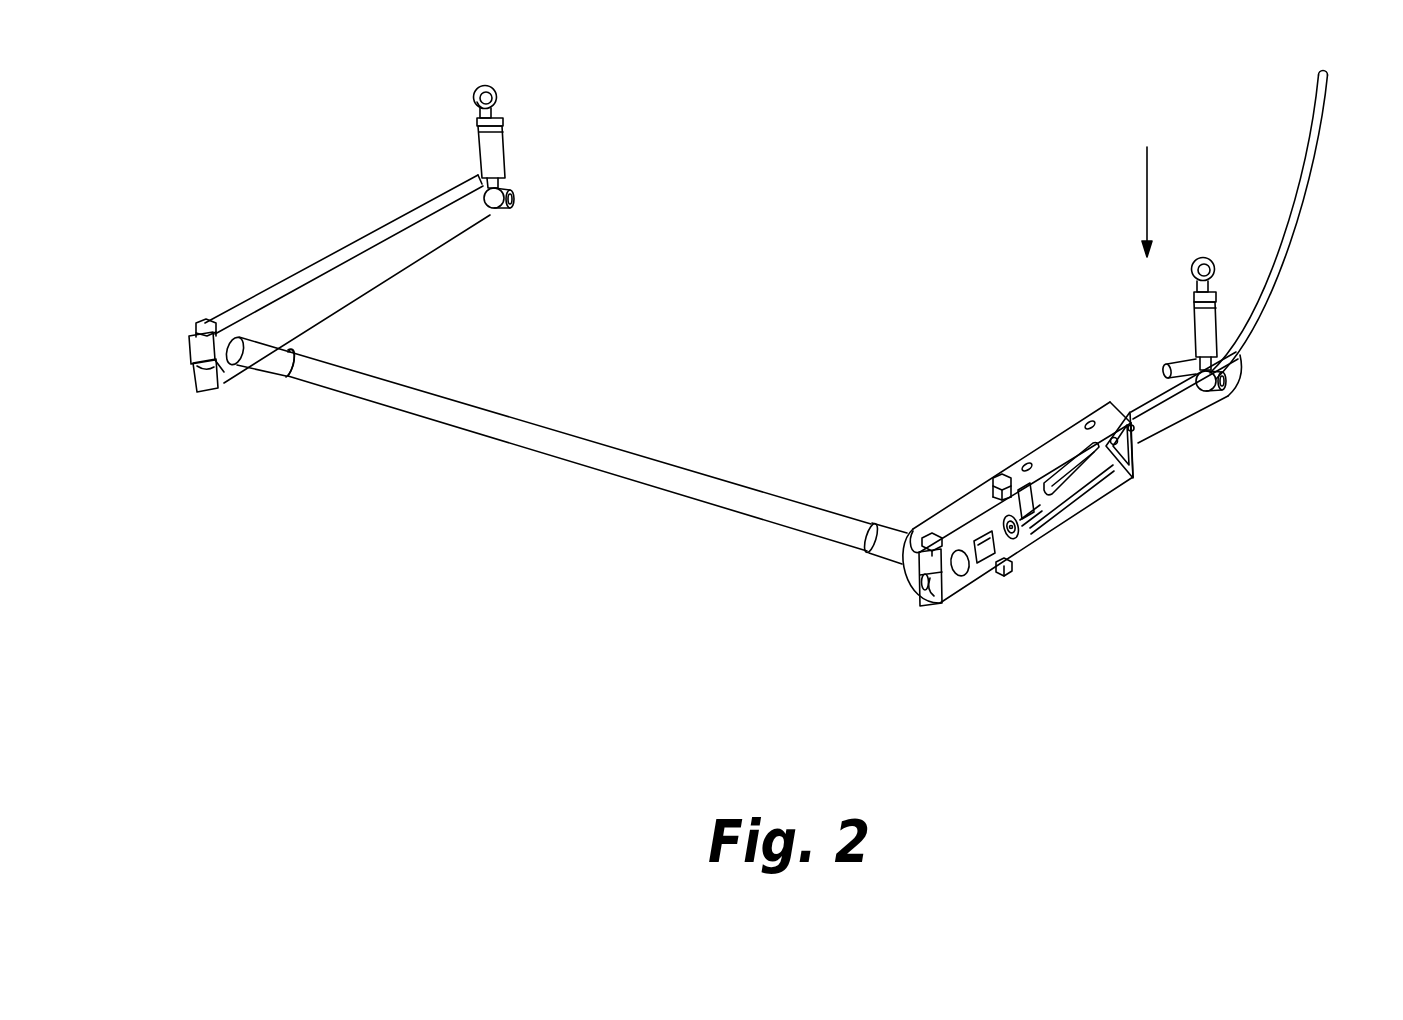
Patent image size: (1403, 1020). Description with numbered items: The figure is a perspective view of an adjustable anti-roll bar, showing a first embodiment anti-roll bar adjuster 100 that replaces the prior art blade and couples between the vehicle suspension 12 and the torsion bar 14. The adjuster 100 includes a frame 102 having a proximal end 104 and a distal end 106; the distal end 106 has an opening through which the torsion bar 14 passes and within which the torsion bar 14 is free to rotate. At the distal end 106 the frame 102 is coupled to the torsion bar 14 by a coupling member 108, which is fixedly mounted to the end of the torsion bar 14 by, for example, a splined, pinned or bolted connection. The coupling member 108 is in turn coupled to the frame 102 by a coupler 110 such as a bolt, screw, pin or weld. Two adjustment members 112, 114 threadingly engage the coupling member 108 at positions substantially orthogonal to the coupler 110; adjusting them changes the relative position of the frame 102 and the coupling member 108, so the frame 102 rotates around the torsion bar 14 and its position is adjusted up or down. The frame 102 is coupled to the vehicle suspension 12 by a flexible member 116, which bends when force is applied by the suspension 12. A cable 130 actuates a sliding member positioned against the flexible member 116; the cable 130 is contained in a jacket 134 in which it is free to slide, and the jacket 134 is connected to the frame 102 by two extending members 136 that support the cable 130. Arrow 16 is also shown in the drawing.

The vehicle suspension 12 is at (508, 148).
The torsion bar 14 is at (608, 476).
The vehicle direction arrow 16 is at (1146, 197).
The anti-roll bar adjuster 100 is at (1087, 528).
The frame 102 is at (1050, 437).
The proximal end 104 is at (1072, 389).
The distal end 106 is at (933, 640).
The coupling member 108 is at (963, 593).
The coupler 110 is at (1030, 543).
The adjustment member 112 is at (1000, 472).
The adjustment member 114 is at (1000, 573).
The flexible member 116 is at (1148, 393).
The cable 130 is at (1023, 530).
The jacket 134 is at (1252, 340).
The extending members 136 is at (1143, 472).